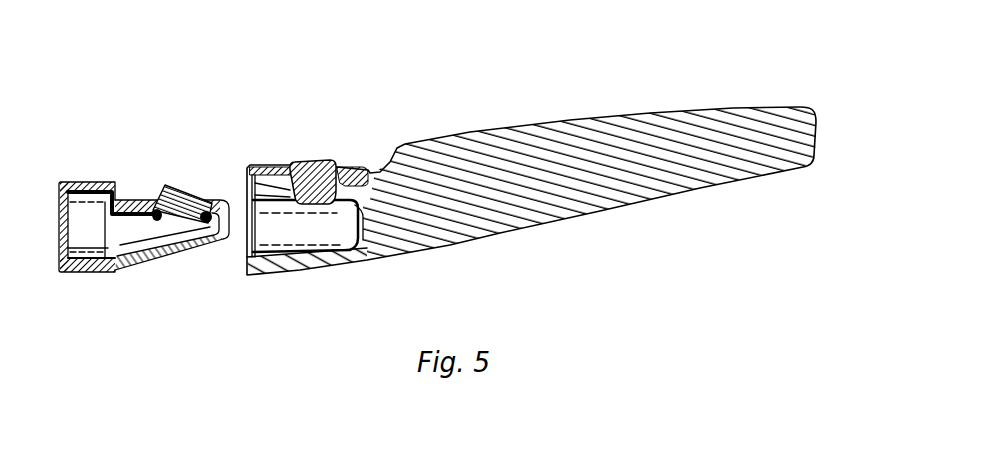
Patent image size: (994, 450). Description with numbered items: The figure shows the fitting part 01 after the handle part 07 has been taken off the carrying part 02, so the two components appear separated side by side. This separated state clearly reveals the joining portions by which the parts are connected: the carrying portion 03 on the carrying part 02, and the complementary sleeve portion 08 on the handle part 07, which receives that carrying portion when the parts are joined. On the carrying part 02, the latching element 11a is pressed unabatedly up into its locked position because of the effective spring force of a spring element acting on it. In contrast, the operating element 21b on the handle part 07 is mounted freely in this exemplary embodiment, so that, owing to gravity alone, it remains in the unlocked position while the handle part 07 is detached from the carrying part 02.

The fitting part 01 is at (155, 58).
The carrying part 02 is at (103, 270).
The carrying portion 03 is at (222, 302).
The handle part 07 is at (517, 157).
The sleeve portion 08 is at (358, 303).
The latching element 11a is at (160, 187).
The operating element 21b is at (300, 162).